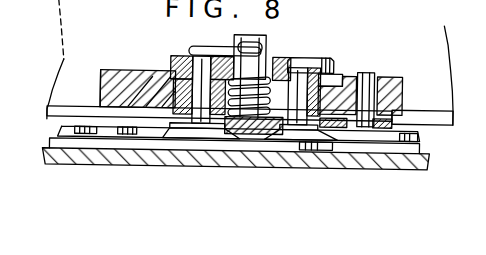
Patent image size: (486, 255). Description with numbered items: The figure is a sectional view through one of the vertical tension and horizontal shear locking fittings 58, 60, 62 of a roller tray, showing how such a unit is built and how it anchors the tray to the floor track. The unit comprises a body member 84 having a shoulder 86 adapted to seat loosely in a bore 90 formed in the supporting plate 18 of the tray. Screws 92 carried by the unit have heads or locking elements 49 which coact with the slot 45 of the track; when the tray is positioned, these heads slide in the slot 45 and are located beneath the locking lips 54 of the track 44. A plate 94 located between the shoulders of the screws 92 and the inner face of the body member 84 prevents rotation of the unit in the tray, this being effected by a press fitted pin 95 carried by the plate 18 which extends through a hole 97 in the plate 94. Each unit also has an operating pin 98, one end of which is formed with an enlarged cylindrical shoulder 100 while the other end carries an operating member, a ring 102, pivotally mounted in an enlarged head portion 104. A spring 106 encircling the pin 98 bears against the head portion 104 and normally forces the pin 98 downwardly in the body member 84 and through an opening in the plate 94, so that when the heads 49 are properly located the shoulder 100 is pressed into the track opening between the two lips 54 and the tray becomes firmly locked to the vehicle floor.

The plate 18 is at (100, 76).
The base plate 44 is at (392, 163).
The slot 45 is at (110, 142).
The locking element 49 is at (205, 143).
The locking lip 54 is at (97, 133).
The locking fitting 58 is at (315, 65).
The locking fitting 60 is at (304, 64).
The locking fitting 62 is at (293, 51).
The body member 84 is at (148, 74).
The shoulder 86 is at (176, 63).
The bore 90 is at (219, 104).
The screw 92 is at (172, 62).
The plate 94 is at (393, 121).
The press fitted pin 95 is at (367, 78).
The hole 97 is at (395, 101).
The operating pin 98 is at (277, 100).
The enlarged cylindrical shoulder 100 is at (245, 135).
The ring 102 is at (190, 47).
The enlarged head portion 104 is at (262, 43).
The spring 106 is at (300, 60).